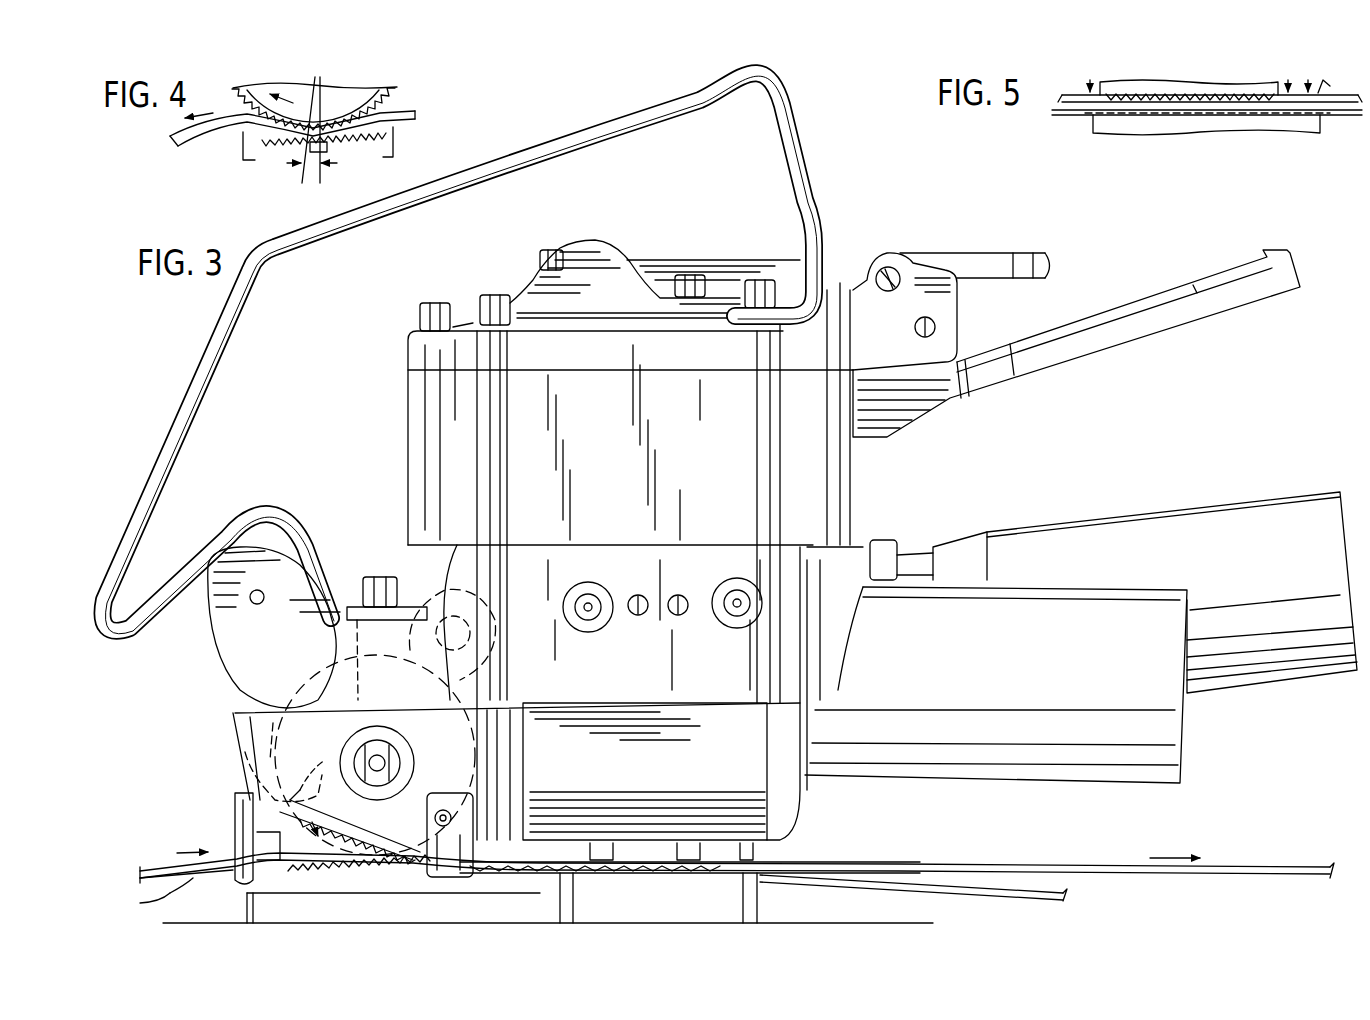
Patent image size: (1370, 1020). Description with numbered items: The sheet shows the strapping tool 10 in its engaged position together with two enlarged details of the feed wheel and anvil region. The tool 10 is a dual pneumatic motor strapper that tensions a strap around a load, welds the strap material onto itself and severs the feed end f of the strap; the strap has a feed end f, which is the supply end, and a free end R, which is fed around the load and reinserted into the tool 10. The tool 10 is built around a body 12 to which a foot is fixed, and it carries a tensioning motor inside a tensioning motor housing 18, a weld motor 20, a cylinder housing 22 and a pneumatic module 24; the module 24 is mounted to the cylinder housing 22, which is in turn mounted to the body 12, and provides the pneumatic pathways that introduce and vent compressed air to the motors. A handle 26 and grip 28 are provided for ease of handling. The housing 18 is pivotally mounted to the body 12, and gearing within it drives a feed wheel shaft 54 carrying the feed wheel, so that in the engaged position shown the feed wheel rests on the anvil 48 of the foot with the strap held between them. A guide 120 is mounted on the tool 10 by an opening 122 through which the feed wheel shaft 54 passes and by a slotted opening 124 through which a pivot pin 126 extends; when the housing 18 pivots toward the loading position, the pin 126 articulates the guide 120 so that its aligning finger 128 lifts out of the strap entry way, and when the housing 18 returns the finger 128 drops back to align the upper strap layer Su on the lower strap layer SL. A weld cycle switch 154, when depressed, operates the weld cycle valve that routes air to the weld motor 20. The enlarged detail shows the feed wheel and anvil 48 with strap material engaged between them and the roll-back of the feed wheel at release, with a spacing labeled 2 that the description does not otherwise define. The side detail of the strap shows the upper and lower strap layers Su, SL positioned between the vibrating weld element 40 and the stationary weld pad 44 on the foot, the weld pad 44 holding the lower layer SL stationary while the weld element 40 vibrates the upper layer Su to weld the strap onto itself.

In FIG. 3, the strapping tool 10 is at (814, 127).
In FIG. 3, the body 12 is at (642, 664).
In FIG. 3, the tensioning motor housing 18 is at (1178, 532).
In FIG. 3, the weld motor 20 is at (1163, 727).
In FIG. 3, the cylinder housing 22 is at (408, 407).
In FIG. 3, the pneumatic module 24 is at (718, 270).
In FIG. 3, the handle 26 is at (798, 163).
In FIG. 3, the grip 28 is at (1205, 312).
In FIG. 3, the feed wheel shaft 54 is at (357, 608).
In FIG. 3, the guide 120 is at (300, 735).
In FIG. 3, the opening 122 is at (300, 728).
In FIG. 3, the slotted opening 124 is at (440, 627).
In FIG. 3, the pivot pin 126 is at (460, 530).
In FIG. 3, the aligning finger 128 is at (232, 860).
In FIG. 3, the weld cycle switch 154 is at (1040, 262).
In FIG. 4, the gap dimension 2 is at (323, 165).
In FIG. 4, the anvil 48 is at (275, 157).
In FIG. 5, the weld element 40 is at (1120, 90).
In FIG. 5, the weld pad 44 is at (1093, 122).
In FIG. 4, the upper strap layer Su is at (413, 112).
In FIG. 5, the upper strap layer Su is at (1323, 117).
In FIG. 3, the upper strap layer Su is at (177, 870).
In FIG. 4, the lower strap layer SL is at (413, 121).
In FIG. 5, the lower strap layer SL is at (1340, 113).
In FIG. 3, the lower strap layer SL is at (140, 903).
In FIG. 3, the free end R is at (193, 880).
In FIG. 3, the feed end f is at (1252, 868).